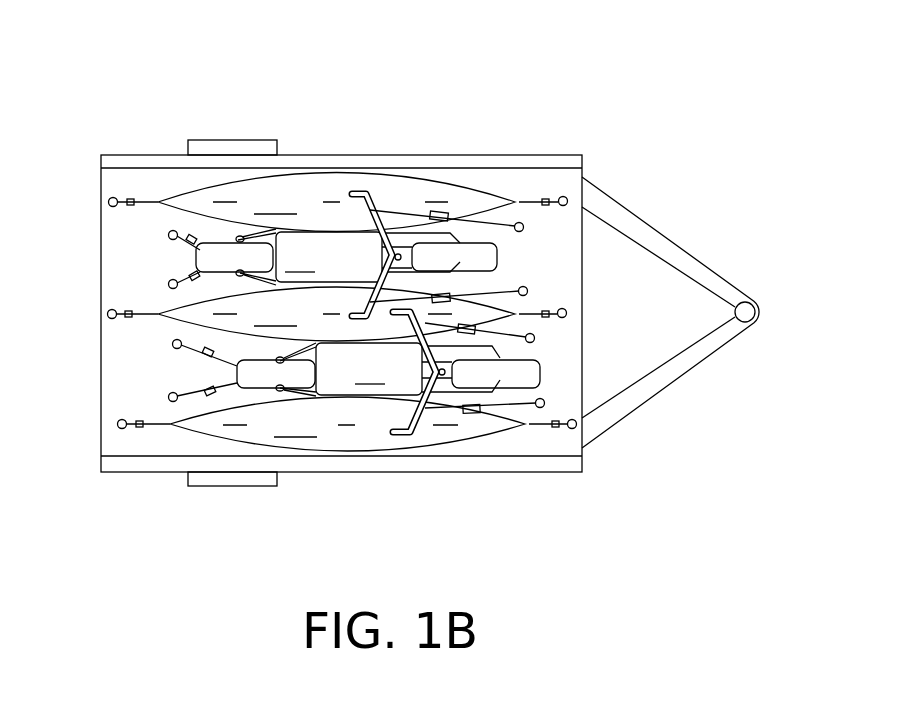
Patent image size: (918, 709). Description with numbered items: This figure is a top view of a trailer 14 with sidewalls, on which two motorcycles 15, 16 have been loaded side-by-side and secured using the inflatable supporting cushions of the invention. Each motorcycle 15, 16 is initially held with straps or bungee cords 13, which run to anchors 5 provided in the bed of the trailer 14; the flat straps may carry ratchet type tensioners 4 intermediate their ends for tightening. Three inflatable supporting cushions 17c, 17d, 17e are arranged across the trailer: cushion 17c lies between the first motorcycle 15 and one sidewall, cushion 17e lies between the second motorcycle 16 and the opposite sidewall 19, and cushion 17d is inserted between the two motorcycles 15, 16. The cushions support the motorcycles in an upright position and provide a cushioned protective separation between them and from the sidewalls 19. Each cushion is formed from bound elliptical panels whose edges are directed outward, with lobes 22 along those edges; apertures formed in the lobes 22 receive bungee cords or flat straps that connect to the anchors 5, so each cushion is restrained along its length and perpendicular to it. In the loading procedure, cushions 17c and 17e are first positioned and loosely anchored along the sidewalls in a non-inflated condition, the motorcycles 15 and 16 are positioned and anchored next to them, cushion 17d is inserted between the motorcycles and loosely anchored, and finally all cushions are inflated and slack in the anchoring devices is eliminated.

The trailer 14 is at (463, 269).
The sidewall 19 is at (500, 160).
The inflatable supporting cushion 17c is at (336, 202).
The inflatable supporting cushion 17d is at (336, 314).
The inflatable supporting cushion 17e is at (347, 424).
The motorcycle 15 is at (346, 257).
The motorcycle 16 is at (388, 369).
The lobe 22 is at (158, 200).
The straps or bungee cords 13 is at (129, 199).
The ratchet type tensioner 4 is at (469, 413).
The anchor 5 is at (108, 204).